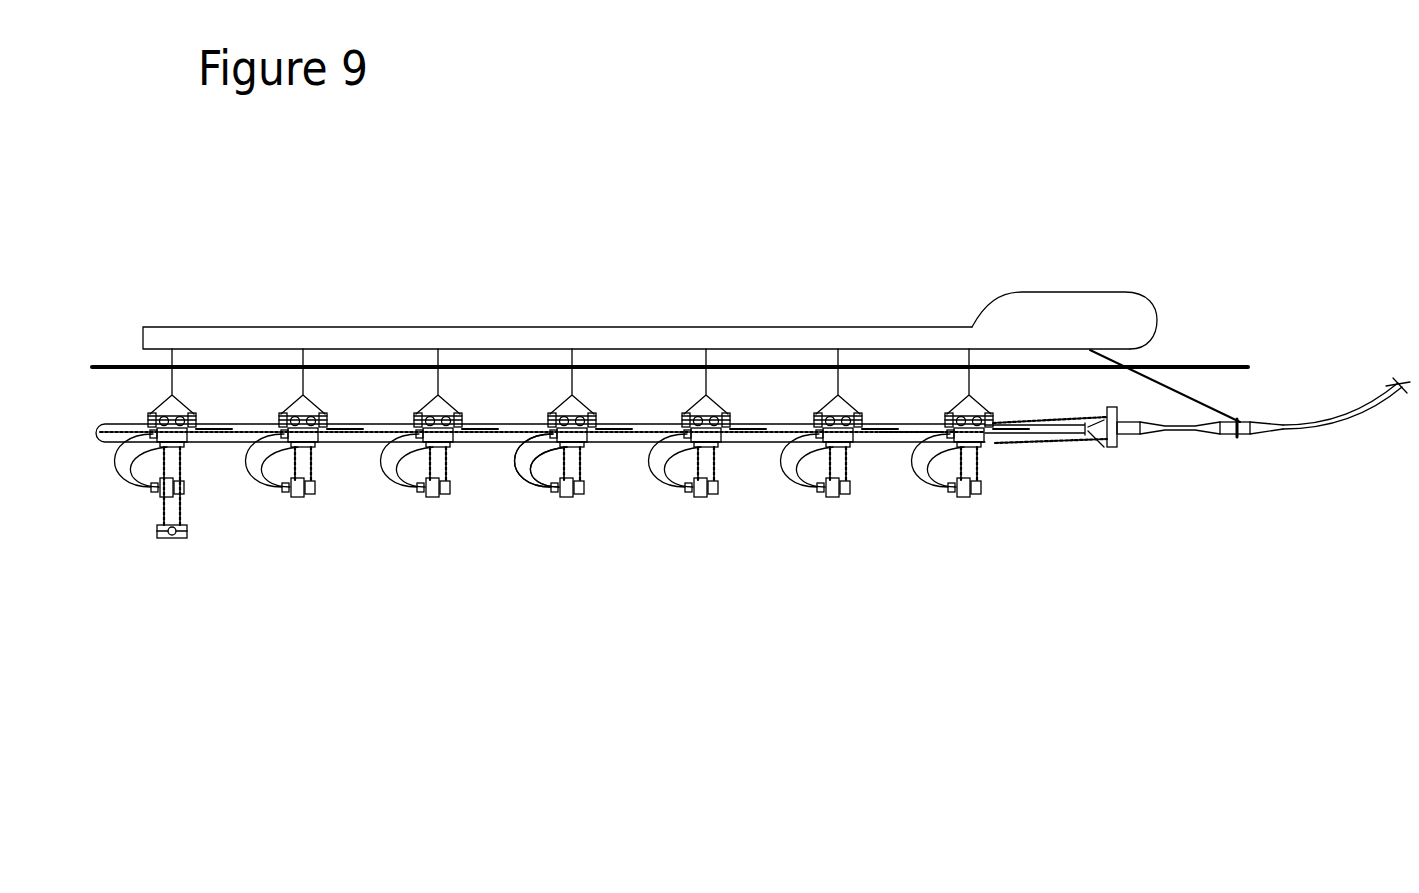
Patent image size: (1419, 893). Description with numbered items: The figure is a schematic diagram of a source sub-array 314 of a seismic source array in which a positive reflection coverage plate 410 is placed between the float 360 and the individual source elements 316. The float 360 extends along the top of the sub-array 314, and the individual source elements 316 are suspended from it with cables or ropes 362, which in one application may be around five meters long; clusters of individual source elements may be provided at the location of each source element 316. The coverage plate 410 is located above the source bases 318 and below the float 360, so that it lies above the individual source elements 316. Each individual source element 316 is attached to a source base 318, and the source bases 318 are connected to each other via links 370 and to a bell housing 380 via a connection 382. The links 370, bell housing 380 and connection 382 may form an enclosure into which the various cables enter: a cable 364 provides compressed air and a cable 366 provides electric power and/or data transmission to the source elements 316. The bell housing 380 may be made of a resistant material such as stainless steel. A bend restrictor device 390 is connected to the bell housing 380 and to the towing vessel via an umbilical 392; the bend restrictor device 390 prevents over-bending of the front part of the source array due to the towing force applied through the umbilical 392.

The spray boom assembly 314 is at (652, 241).
The individual source elements 316 is at (436, 494).
The source bases 318 is at (720, 447).
The float 360 is at (1062, 311).
The cables or ropes 362 is at (443, 404).
The cable 364 is at (518, 460).
The cable 366 is at (562, 481).
The links 370 is at (925, 428).
The bell housing 380 is at (1133, 436).
The connection 382 is at (1048, 441).
The bend restrictor device 390 is at (1243, 437).
The umbilical 392 is at (1343, 427).
The coverage plate 410 is at (111, 365).